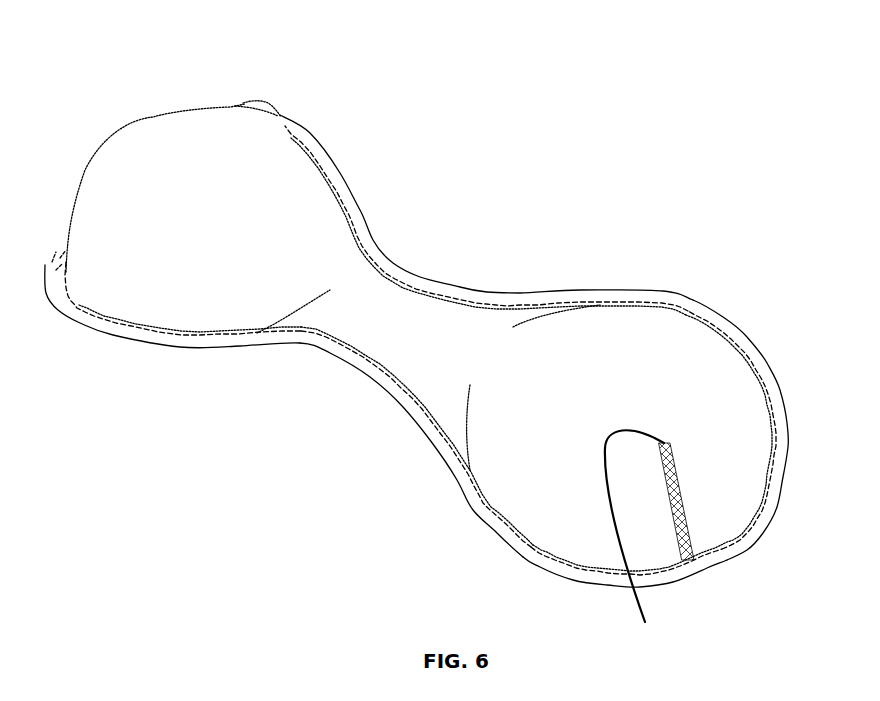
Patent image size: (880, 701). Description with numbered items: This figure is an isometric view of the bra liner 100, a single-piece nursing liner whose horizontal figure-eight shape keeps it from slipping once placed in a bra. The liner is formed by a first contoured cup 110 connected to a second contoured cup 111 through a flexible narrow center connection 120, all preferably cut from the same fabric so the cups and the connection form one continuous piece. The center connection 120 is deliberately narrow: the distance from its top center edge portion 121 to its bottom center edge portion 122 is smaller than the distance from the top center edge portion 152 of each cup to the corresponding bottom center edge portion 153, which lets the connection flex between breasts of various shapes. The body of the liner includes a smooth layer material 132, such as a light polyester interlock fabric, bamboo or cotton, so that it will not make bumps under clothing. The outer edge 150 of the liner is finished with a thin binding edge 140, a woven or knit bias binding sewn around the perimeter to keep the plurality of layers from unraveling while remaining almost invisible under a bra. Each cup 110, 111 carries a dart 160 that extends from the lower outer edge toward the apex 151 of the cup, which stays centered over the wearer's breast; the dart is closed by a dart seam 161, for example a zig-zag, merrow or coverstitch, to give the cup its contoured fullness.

The bra liner 100 is at (300, 504).
The first contoured cup 110 is at (213, 178).
The second contoured cup 111 is at (609, 375).
The flexible narrow center connection 120 is at (380, 307).
The top center edge portion of the flexible narrow center connection 121 is at (411, 282).
The bottom center edge portion of the flexible narrow center connection 122 is at (372, 348).
The smooth layer material 132 is at (245, 277).
The binding edge 140 is at (772, 502).
The outer edge 150 is at (59, 284).
The apex 151 is at (636, 547).
The top center edge portion of the first and second contoured cups 152 is at (278, 118).
The bottom center edge portion of the first and second contoured cups 153 is at (90, 313).
The dart 160 is at (687, 479).
The dart seam 161 is at (675, 497).